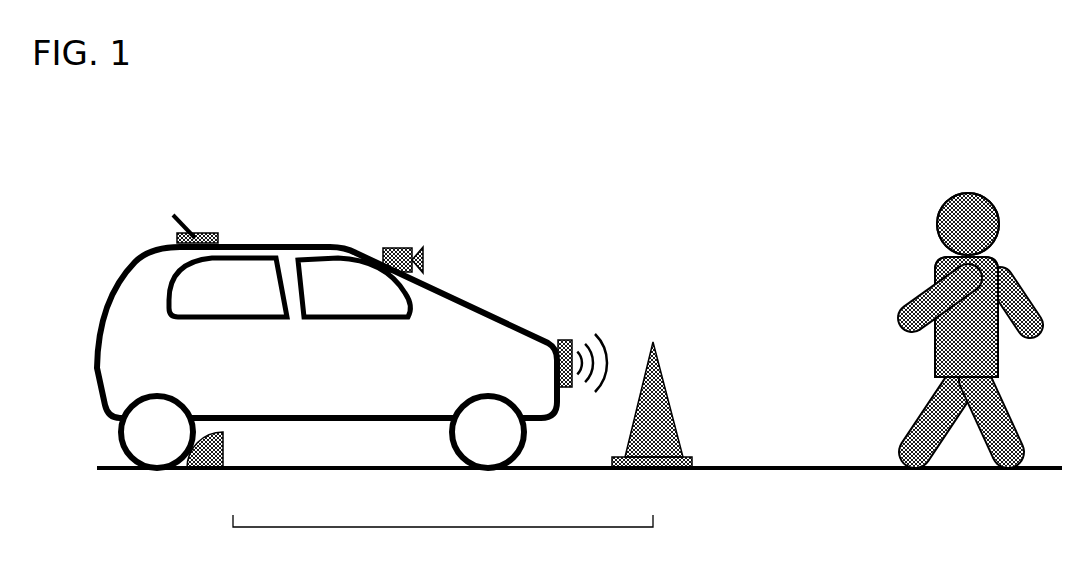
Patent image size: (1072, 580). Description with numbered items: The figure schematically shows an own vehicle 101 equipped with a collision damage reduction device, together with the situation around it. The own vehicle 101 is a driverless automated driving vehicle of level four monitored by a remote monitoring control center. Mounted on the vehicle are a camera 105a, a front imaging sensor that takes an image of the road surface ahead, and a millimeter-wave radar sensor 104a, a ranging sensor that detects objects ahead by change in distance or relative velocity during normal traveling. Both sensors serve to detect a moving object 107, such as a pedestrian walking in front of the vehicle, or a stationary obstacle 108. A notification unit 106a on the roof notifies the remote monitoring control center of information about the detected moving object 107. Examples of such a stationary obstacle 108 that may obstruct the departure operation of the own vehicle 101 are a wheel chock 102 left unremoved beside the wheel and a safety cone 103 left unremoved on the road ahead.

The own vehicle 101 is at (487, 313).
The wheel chock 102 is at (221, 470).
The safety cone 103 is at (633, 470).
The millimeter-wave radar sensor 104a is at (563, 342).
The camera 105a is at (403, 248).
The notification unit 106a is at (205, 232).
The moving object 107 is at (990, 200).
The stationary obstacle 108 is at (445, 527).